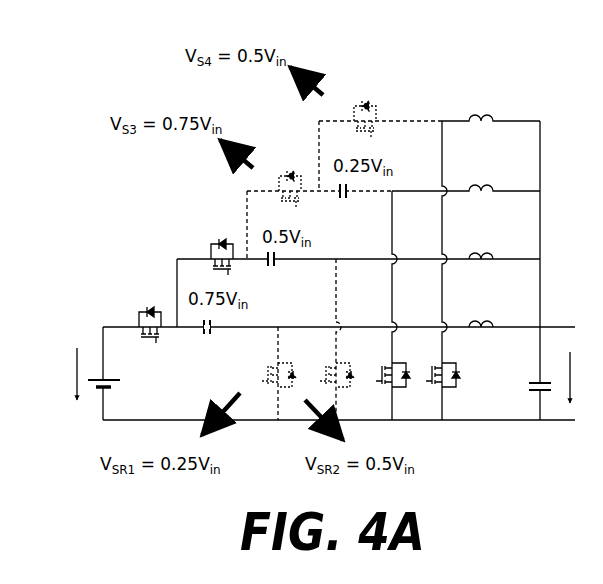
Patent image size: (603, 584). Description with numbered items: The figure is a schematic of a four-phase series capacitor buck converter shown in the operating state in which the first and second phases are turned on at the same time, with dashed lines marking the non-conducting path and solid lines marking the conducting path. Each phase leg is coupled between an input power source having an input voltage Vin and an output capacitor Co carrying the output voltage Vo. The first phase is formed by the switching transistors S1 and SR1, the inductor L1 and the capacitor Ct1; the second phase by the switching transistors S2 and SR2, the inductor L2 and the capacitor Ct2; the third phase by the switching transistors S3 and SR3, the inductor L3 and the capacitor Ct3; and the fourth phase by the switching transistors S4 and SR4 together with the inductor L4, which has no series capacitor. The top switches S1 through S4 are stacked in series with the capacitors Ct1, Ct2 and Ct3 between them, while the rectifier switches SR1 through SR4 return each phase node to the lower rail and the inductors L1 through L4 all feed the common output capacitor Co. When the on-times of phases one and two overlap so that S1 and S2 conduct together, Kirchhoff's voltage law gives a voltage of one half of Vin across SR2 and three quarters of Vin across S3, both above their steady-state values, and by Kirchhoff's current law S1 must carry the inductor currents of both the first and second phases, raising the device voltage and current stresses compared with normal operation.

The switching transistor S1 is at (339, 322).
The switching transistor S2 is at (358, 280).
The switching transistor S3 is at (319, 213).
The switching transistor S4 is at (380, 141).
The switching transistor SR1 is at (266, 373).
The switching transistor SR2 is at (325, 339).
The switching transistor SR3 is at (382, 305).
The switching transistor SR4 is at (432, 270).
The capacitor Ct1 is at (204, 341).
The capacitor Ct2 is at (272, 273).
The capacitor Ct3 is at (344, 203).
The inductor L1 is at (481, 311).
The inductor L2 is at (481, 244).
The inductor L3 is at (466, 177).
The inductor L4 is at (491, 256).
The output capacitor Co is at (527, 388).
The input voltage Vin is at (310, 373).
The output voltage Vo is at (582, 377).